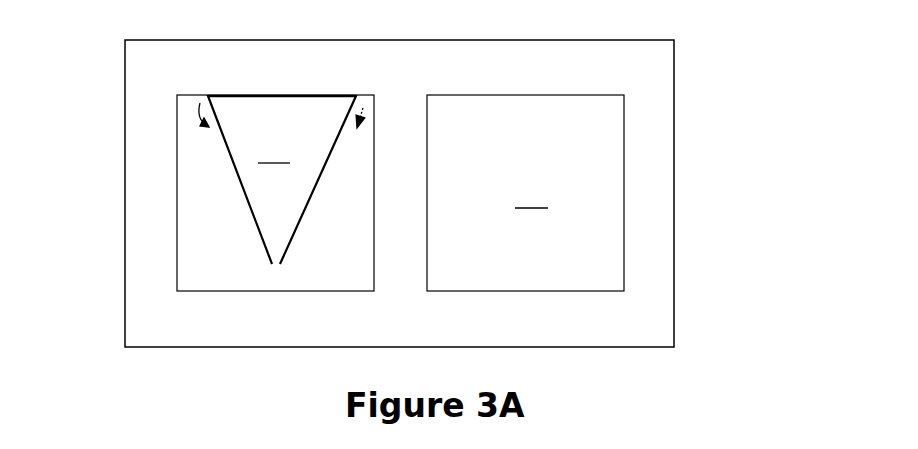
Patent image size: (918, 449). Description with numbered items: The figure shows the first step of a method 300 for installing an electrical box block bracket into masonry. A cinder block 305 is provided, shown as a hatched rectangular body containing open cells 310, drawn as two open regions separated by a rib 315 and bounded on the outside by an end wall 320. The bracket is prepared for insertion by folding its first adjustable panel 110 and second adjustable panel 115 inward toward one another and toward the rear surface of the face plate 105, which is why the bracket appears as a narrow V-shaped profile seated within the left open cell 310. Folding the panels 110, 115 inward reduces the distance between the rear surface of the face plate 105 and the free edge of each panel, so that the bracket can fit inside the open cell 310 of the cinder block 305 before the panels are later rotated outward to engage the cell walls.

The method 300 is at (698, 40).
The cinder block 305 is at (603, 322).
The open cell 310 is at (403, 176).
The rib 315 is at (404, 268).
The end wall 320 is at (141, 253).
The face plate 105 is at (274, 81).
The first adjustable panel 110 is at (313, 233).
The second adjustable panel 115 is at (210, 160).